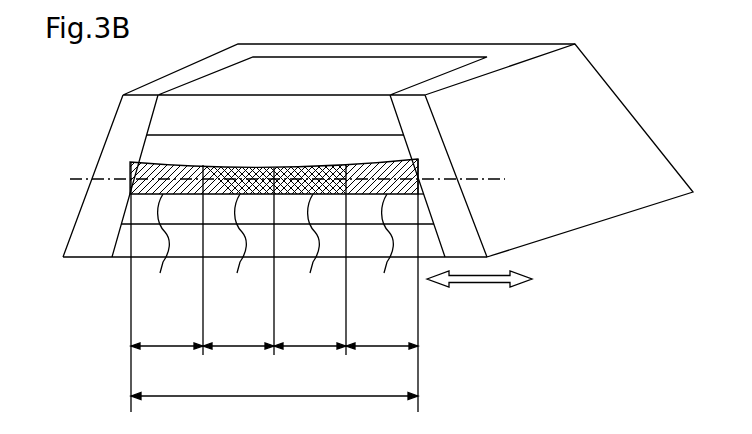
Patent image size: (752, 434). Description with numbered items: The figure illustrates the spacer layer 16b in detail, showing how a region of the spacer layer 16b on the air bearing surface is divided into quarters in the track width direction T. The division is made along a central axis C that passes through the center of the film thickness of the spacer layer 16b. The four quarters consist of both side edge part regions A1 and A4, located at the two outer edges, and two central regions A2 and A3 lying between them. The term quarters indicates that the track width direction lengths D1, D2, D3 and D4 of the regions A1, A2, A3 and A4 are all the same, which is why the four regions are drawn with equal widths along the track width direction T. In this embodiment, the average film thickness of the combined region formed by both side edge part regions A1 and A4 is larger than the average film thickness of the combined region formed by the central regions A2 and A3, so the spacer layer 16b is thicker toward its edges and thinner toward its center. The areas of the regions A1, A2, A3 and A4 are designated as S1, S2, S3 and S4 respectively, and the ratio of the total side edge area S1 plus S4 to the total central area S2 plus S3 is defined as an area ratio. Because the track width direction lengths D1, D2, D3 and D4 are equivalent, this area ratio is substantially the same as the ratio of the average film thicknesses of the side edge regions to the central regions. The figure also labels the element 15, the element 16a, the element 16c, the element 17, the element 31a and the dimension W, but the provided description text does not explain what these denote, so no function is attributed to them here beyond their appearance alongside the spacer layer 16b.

The substrate 15 is at (118, 245).
The lower cladding layer 16a is at (127, 215).
The spacer layer 16b is at (128, 170).
The upper cladding layer 16c is at (152, 141).
The top layer 17 is at (172, 112).
The side block 31a is at (582, 77).
The central axis C is at (286, 180).
The area of region A1 S1 is at (162, 246).
The area of region A2 S2 is at (237, 246).
The area of region A3 S3 is at (312, 246).
The area of region A4 S4 is at (383, 246).
The side edge part region A1 is at (167, 337).
The central region A2 is at (238, 337).
The central region A3 is at (310, 337).
The side edge part region A4 is at (382, 337).
The track width direction length of region A1 D1 is at (166, 367).
The track width direction length of region A2 D2 is at (242, 367).
The track width direction length of region A3 D3 is at (309, 367).
The track width direction length of region A4 D4 is at (382, 367).
The total width W is at (274, 409).
The track width direction T is at (479, 292).